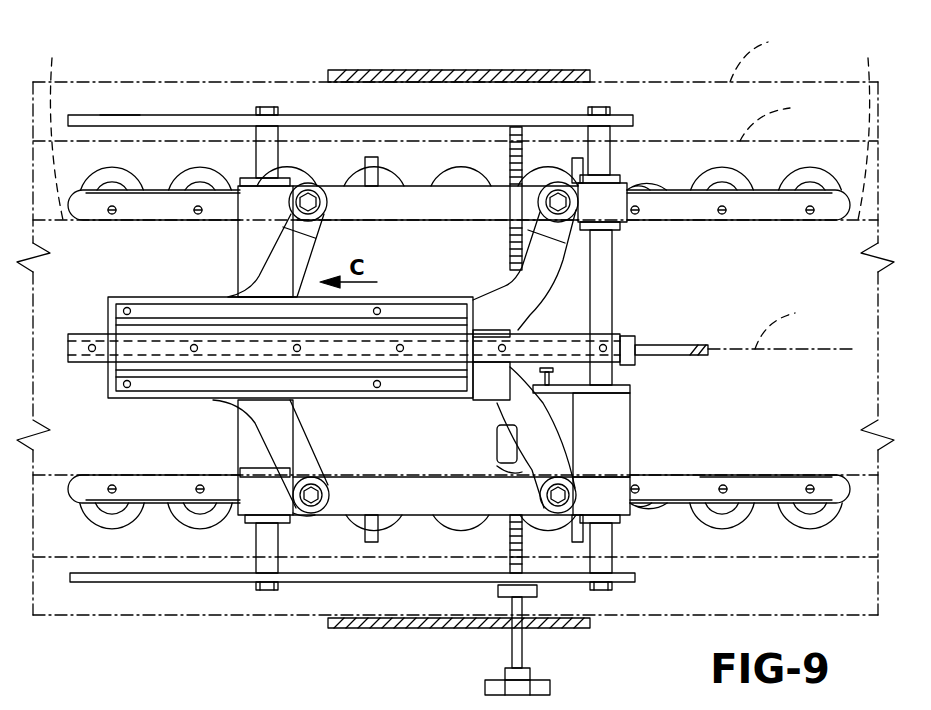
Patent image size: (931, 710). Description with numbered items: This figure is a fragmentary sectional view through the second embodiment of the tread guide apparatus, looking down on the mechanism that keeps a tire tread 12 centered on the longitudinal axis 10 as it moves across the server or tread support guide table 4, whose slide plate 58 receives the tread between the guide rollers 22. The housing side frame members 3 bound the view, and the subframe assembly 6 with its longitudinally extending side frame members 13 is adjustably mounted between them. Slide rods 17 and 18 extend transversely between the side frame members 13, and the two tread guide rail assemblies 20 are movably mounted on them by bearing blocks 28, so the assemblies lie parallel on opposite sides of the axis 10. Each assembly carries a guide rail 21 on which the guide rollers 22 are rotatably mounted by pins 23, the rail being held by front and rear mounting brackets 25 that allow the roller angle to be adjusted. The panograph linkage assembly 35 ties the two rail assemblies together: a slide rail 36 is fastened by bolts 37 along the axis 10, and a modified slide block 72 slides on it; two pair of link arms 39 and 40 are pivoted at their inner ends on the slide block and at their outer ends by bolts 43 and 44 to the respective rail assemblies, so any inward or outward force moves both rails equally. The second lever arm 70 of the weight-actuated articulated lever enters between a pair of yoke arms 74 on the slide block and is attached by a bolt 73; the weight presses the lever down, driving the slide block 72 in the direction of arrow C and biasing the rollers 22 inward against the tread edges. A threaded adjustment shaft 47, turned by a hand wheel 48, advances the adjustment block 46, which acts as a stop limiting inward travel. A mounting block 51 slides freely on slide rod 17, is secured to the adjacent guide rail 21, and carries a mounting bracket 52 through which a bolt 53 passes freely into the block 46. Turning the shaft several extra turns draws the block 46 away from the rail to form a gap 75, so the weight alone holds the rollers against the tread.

The side frame members 3 is at (583, 72).
The server or tread support guide table 4 is at (762, 54).
The subframe assembly 6 is at (118, 105).
The longitudinal axis 10 is at (781, 324).
The tire tread 12 is at (452, 128).
The side frame members 13 is at (188, 116).
The slide rod 17 is at (613, 258).
The slide rod 18 is at (256, 450).
The tread guide rail assemblies 20 is at (748, 226).
The guide rail 21 is at (828, 485).
The guide rollers 22 is at (722, 172).
The pins 23 is at (114, 214).
The mounting brackets 25 is at (372, 158).
The bearing blocks 28 is at (618, 198).
The panograph linkage assembly 35 is at (182, 405).
The slide rail 36 is at (628, 337).
The bolts 37 is at (90, 346).
The link arms 39 is at (278, 266).
The link arms 40 is at (303, 450).
The bolts 43 is at (312, 200).
The bolts 44 is at (312, 500).
The adjustment block 46 is at (505, 441).
The threaded adjustment shaft 47 is at (512, 158).
The hand wheel 48 is at (550, 688).
The mounting block 51 is at (625, 442).
The mounting bracket 52 is at (633, 390).
The bolt 53 is at (545, 376).
The slide plate 58 is at (786, 118).
The second lever arm 70 is at (705, 357).
The modified slide block 72 is at (410, 310).
The bolt 73 is at (497, 330).
The yoke arms 74 is at (500, 372).
The gap 75 is at (498, 470).